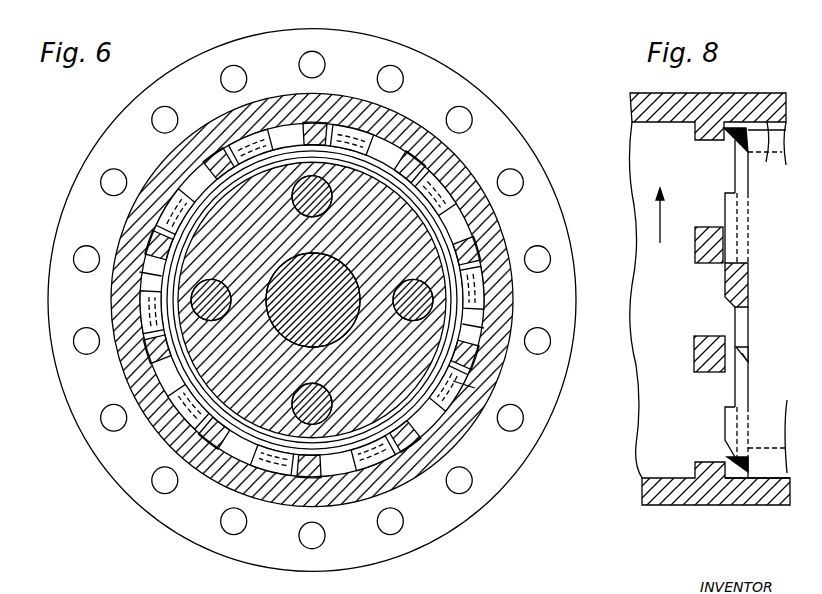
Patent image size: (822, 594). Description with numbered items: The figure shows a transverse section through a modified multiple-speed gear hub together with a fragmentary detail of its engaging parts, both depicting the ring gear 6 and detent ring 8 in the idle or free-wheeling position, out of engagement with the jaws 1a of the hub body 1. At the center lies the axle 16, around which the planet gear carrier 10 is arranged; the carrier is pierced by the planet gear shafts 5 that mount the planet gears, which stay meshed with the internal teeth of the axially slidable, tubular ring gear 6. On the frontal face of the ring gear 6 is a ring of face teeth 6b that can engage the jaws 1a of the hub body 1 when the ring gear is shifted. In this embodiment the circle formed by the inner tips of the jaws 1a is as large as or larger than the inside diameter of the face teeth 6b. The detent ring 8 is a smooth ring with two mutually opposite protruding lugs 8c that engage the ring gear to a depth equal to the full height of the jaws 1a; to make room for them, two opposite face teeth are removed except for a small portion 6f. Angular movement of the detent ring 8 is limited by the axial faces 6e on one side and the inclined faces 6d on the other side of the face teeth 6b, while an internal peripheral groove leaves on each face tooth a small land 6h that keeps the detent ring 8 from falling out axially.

In FIG. 6, the hub body 1 is at (453, 163).
In FIG. 8, the hub body 1 is at (632, 100).
In FIG. 6, the jaws 1a is at (420, 447).
In FIG. 8, the jaws 1a is at (708, 130).
In FIG. 6, the planet gear shafts 5 is at (322, 190).
In FIG. 8, the ring gear 6 is at (776, 125).
In FIG. 6, the face teeth 6b is at (250, 140).
In FIG. 8, the face teeth 6b is at (727, 415).
In FIG. 8, the inclined faces 6d is at (740, 255).
In FIG. 8, the axial faces 6e is at (738, 348).
In FIG. 6, the small portion 6f is at (480, 297).
In FIG. 8, the small portion 6f is at (742, 353).
In FIG. 6, the land 6h is at (440, 380).
In FIG. 8, the land 6h is at (726, 148).
In FIG. 6, the detent ring 8 is at (217, 180).
In FIG. 8, the detent ring 8 is at (735, 377).
In FIG. 6, the lugs 8c is at (480, 320).
In FIG. 6, the planet gear carrier 10 is at (423, 227).
In FIG. 6, the axle 16 is at (330, 300).